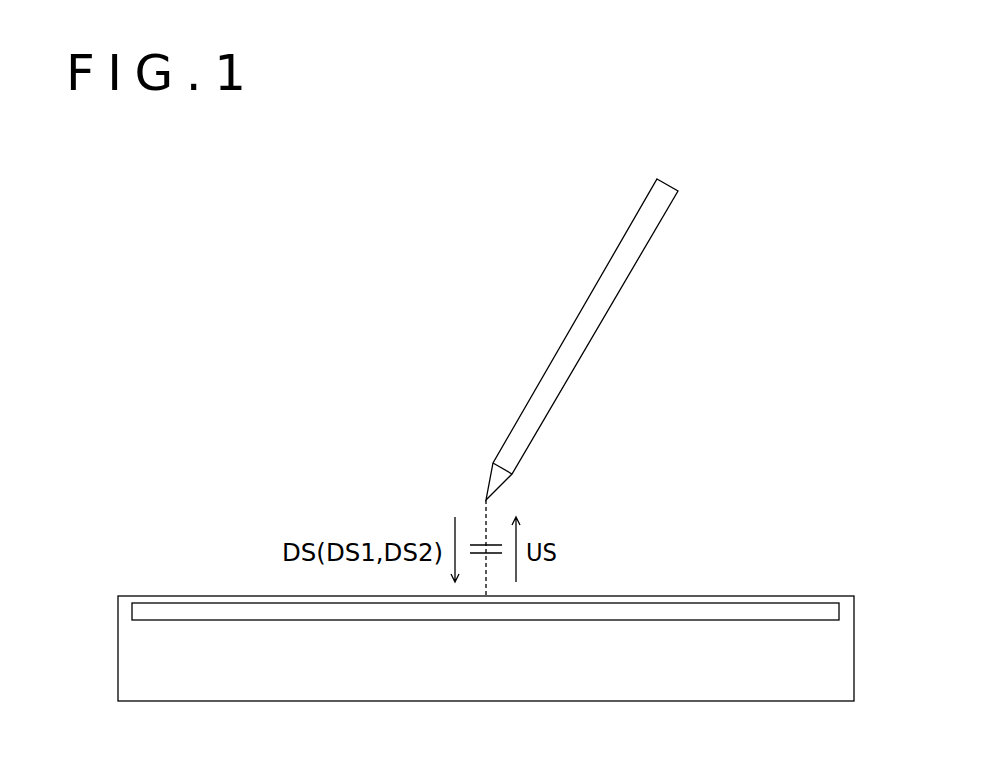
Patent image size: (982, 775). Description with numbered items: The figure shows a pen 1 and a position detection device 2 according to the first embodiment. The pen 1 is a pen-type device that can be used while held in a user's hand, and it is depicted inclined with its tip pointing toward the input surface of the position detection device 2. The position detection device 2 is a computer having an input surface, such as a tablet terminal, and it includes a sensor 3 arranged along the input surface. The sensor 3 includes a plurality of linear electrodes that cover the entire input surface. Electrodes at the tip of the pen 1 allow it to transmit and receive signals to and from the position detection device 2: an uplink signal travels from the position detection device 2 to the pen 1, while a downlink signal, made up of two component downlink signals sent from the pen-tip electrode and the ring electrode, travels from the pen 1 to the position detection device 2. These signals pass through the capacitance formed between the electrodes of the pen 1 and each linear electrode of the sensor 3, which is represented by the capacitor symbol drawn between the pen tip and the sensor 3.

The pen 1 is at (664, 187).
The position detection device 2 is at (829, 703).
The sensor 3 is at (764, 621).